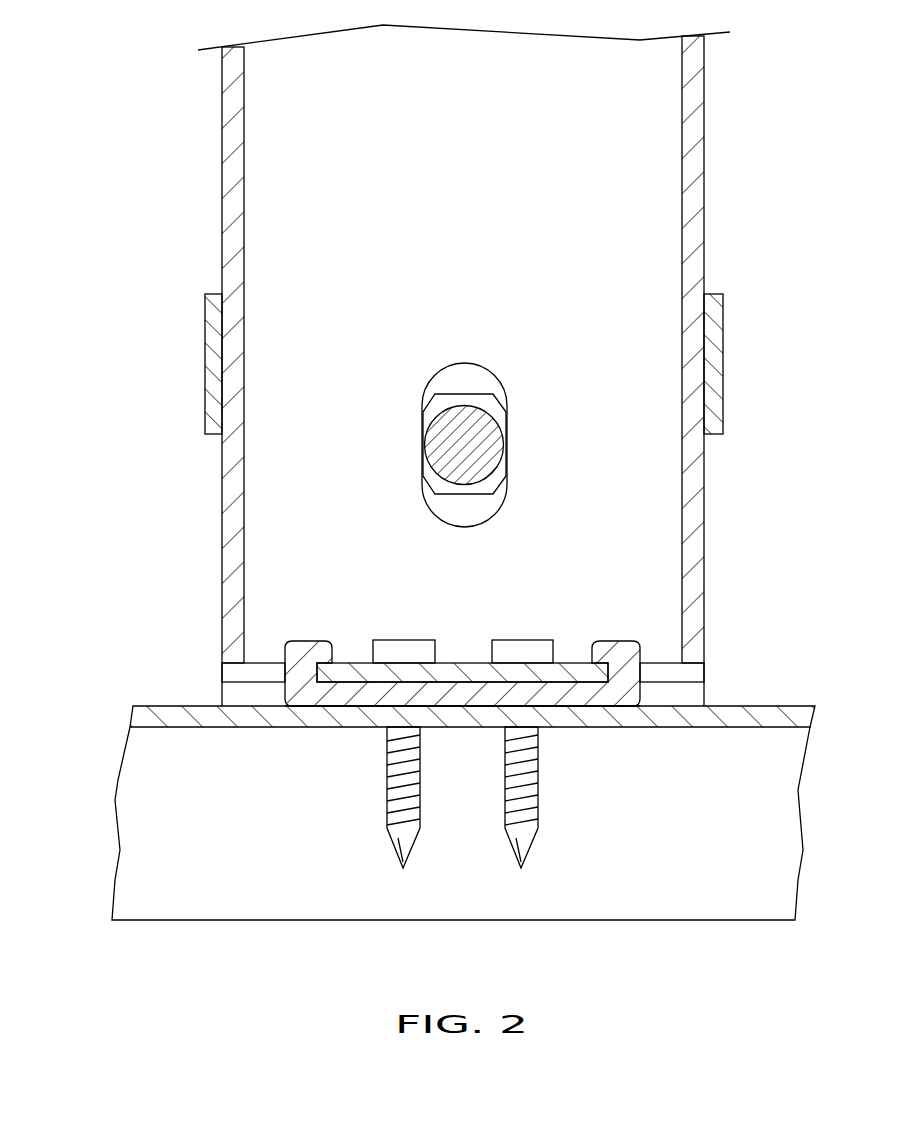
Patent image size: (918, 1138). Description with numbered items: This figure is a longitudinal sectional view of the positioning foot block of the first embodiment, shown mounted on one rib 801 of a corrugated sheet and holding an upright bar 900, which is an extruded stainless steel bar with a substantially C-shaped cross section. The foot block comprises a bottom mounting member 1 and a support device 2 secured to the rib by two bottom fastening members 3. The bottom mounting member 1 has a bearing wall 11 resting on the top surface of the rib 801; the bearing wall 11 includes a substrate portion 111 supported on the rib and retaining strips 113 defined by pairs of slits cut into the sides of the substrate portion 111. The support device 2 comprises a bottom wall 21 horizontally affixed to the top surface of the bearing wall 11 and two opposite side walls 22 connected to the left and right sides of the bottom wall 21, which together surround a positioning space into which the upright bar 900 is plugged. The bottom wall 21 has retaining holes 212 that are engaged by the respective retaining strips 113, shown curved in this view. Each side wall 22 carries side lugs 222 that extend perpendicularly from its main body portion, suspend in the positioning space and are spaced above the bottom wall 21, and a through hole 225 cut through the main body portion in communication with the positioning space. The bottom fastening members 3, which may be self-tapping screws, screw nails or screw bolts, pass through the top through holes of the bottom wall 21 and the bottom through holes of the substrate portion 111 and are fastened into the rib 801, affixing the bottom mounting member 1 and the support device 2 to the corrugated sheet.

The upright bar 900 is at (698, 103).
The support device 2 is at (495, 475).
The side wall 22 is at (495, 341).
The side lug 222 is at (220, 388).
The through hole 225 is at (495, 512).
The bottom wall 21 is at (512, 665).
The retaining hole 212 is at (688, 674).
The bottom mounting member 1 is at (463, 589).
The bearing wall 11 is at (463, 636).
The substrate portion 111 is at (333, 697).
The retaining strip 113 is at (317, 653).
The rib 801 is at (205, 810).
The bottom fastening member 3 is at (513, 842).